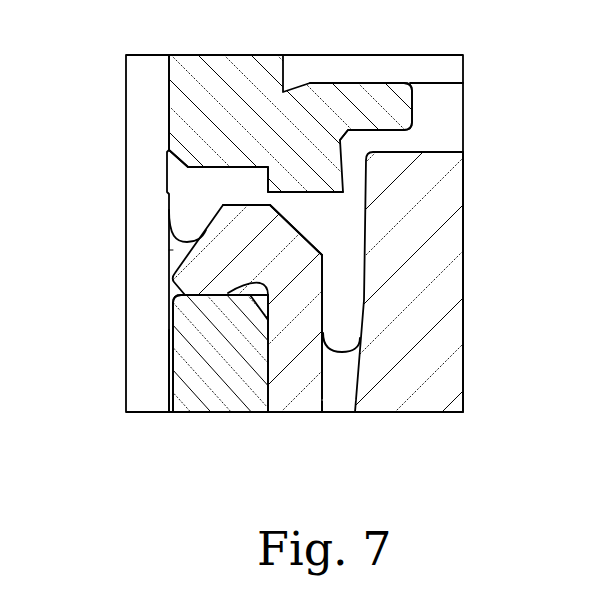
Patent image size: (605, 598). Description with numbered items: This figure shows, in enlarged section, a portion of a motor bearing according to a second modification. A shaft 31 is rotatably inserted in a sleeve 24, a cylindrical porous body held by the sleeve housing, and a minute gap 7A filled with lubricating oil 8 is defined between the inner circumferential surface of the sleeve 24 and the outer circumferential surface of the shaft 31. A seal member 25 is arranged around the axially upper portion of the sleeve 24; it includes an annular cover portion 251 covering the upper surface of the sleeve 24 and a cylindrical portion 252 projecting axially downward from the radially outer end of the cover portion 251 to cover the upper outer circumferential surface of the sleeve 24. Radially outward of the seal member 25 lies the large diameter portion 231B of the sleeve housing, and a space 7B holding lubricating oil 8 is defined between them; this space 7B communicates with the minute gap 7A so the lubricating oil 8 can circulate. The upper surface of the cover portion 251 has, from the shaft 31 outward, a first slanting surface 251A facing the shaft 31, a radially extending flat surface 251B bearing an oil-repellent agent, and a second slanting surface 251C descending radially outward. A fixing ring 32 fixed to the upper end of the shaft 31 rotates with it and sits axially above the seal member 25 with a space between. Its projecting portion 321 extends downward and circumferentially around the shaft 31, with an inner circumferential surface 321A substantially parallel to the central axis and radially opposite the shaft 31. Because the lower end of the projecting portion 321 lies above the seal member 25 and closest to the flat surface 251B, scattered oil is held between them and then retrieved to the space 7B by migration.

The shaft 31 is at (142, 65).
The fixing ring 32 is at (188, 65).
The projecting portion 321 is at (315, 185).
The inner circumferential surface 321A is at (255, 168).
The large diameter portion 231B is at (445, 400).
The seal member 25 is at (317, 462).
The cover portion 251 is at (226, 287).
The cylindrical portion 252 is at (280, 397).
The first slanting surface 251A is at (206, 229).
The flat surface 251B is at (233, 207).
The second slanting surface 251C is at (313, 240).
The sleeve 24 is at (188, 402).
The minute gap 7A is at (169, 366).
The space 7B is at (347, 333).
The lubricating oil 8 is at (175, 253).